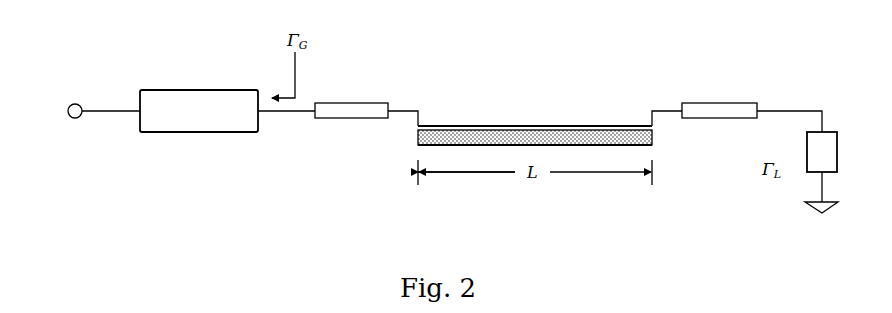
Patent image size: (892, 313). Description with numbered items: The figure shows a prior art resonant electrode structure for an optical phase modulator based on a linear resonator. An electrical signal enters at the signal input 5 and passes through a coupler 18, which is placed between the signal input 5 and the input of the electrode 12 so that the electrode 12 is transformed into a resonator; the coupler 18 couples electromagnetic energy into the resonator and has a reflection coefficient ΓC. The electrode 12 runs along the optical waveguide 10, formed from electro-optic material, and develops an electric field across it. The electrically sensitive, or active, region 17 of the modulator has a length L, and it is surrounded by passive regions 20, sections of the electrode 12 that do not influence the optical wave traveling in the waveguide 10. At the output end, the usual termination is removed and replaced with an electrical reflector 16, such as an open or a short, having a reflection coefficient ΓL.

The signal input 5 is at (68, 112).
The coupler 18 is at (163, 90).
The passive regions 20 is at (374, 93).
The electrode 12 is at (432, 126).
The optical waveguide 10 is at (655, 141).
The active region 17 is at (418, 137).
The electrical reflector 16 is at (807, 165).